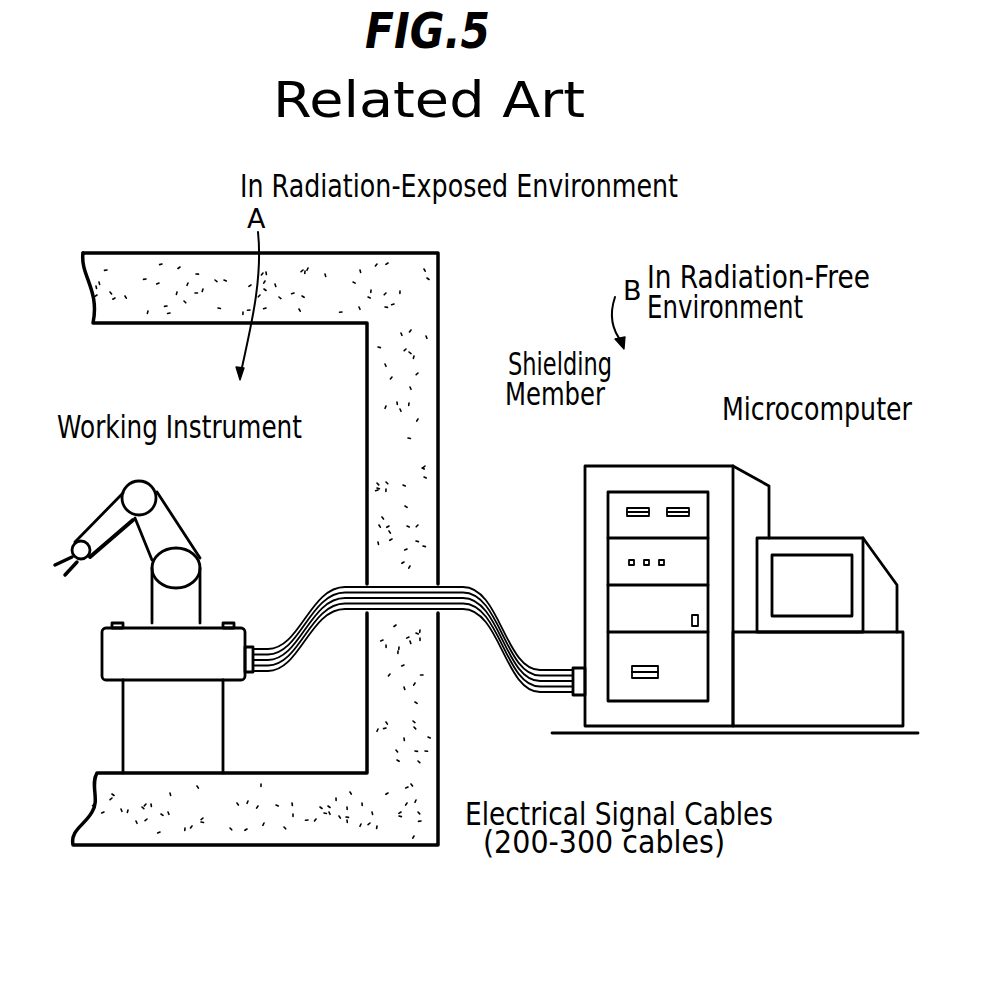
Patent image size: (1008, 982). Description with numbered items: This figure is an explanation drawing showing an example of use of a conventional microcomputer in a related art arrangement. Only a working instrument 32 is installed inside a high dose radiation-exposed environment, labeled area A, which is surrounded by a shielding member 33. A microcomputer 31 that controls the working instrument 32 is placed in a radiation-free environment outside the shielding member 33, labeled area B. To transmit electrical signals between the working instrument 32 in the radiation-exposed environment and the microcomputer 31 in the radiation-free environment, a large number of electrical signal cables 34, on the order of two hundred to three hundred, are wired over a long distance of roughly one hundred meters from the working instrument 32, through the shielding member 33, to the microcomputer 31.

The microcomputer 31 is at (737, 518).
The working instrument 32 is at (180, 523).
The shielding member 33 is at (438, 418).
The electrical signal cables 34 is at (313, 647).